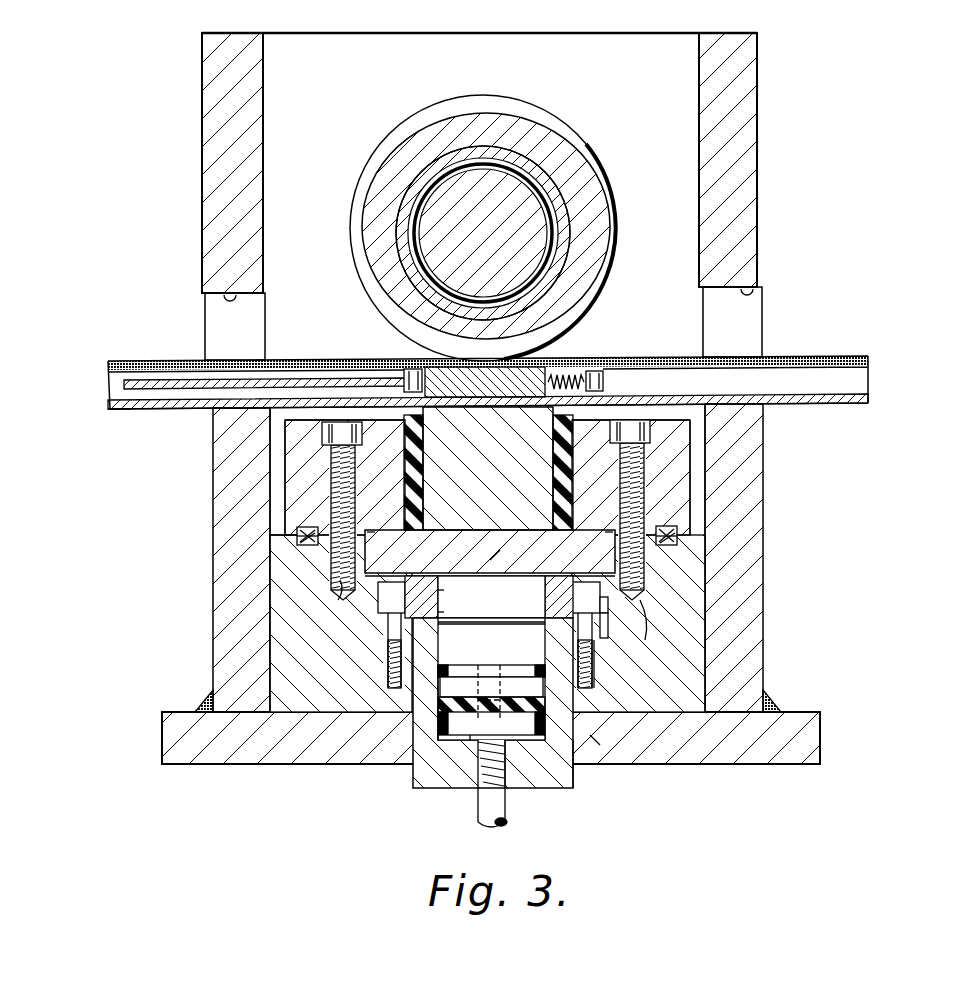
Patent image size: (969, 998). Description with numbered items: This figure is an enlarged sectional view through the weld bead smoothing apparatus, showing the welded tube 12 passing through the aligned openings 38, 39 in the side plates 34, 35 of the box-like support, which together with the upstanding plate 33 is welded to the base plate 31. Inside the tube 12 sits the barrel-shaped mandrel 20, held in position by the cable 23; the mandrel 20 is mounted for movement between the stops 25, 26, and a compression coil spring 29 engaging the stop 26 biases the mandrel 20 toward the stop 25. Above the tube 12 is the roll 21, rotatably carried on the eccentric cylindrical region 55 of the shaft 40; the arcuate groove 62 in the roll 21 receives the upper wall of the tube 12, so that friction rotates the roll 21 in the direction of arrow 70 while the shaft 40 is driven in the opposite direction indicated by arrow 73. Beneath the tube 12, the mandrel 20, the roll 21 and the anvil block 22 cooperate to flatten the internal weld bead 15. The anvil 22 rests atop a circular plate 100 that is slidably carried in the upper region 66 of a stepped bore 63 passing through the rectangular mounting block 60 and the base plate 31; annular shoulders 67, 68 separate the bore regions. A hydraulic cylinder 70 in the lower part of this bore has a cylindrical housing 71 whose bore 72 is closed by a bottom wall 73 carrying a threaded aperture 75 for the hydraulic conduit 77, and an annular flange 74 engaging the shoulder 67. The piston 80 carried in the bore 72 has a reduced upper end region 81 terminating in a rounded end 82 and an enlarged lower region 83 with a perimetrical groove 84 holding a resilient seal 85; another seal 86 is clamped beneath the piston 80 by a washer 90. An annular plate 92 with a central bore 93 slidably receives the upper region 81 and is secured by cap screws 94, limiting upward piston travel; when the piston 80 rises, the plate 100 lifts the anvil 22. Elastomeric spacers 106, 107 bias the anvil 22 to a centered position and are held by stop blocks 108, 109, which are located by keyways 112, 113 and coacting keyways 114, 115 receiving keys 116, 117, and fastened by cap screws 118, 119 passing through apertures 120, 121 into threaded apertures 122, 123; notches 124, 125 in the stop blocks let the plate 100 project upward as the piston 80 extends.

The tube 12 is at (150, 418).
The weld bead 15 is at (112, 372).
The mandrel 20 is at (562, 358).
The roll 21 is at (375, 245).
The anvil block 22 is at (501, 476).
The cable 23 is at (182, 378).
The stop 25 is at (420, 365).
The stop 26 is at (603, 381).
The compression coil spring 29 is at (595, 368).
The base plate 31 is at (780, 746).
The upstanding plate 33 is at (533, 45).
The side plate 34 is at (222, 66).
The side plate 35 is at (745, 65).
The opening 38 is at (222, 297).
The opening 39 is at (752, 296).
The shaft 40 is at (496, 217).
The eccentric cylindrical region 55 is at (553, 237).
The mounting block 60 is at (768, 563).
The arcuate groove 62 is at (600, 290).
The stepped bore 63 is at (418, 728).
The upper region 66 is at (580, 222).
The annular shoulder 67 is at (596, 650).
The annular shoulder 68 is at (598, 603).
The hydraulic cylinder 70 is at (500, 340).
The cylindrical housing 71 is at (590, 745).
The bore 72 is at (548, 643).
The bottom wall 73 is at (525, 778).
The annular flange 74 is at (602, 634).
The threaded aperture 75 is at (486, 797).
The hydraulic conduit 77 is at (510, 820).
The piston 80 is at (420, 672).
The reduced diameter upper end region 81 is at (522, 607).
The rounded end 82 is at (492, 573).
The enlarged diameter lower end region 83 is at (491, 646).
The perimetrical groove 84 is at (490, 668).
The resilient annular seal 85 is at (434, 676).
The resilient annular seal 86 is at (472, 741).
The washer 90 is at (491, 702).
The annular plate 92 is at (436, 618).
The central bore 93 is at (437, 600).
The cap screws 94 is at (390, 598).
The circular plate 100 is at (465, 568).
The elastomeric spacer 106 is at (566, 472).
The elastomeric spacer 107 is at (412, 478).
The stop block 108 is at (680, 478).
The stop block 109 is at (307, 466).
The keyway 112 is at (675, 530).
The keyway 113 is at (300, 530).
The keyway 114 is at (678, 541).
The keyway 115 is at (300, 541).
The key 116 is at (678, 536).
The key 117 is at (298, 538).
The cap screw 118 is at (632, 430).
The cap screw 119 is at (360, 433).
The aperture 120 is at (636, 458).
The aperture 121 is at (334, 466).
The threaded aperture 122 is at (673, 611).
The threaded aperture 123 is at (340, 588).
The notch 124 is at (590, 550).
The notch 125 is at (390, 550).